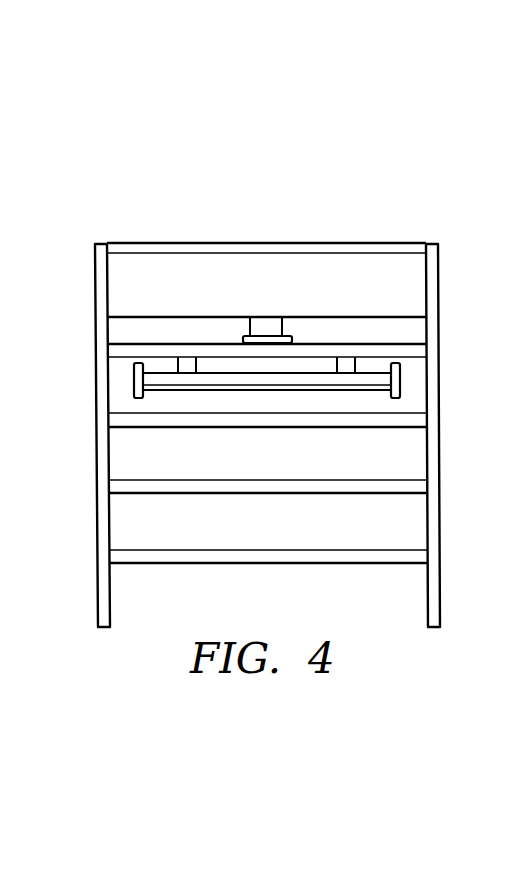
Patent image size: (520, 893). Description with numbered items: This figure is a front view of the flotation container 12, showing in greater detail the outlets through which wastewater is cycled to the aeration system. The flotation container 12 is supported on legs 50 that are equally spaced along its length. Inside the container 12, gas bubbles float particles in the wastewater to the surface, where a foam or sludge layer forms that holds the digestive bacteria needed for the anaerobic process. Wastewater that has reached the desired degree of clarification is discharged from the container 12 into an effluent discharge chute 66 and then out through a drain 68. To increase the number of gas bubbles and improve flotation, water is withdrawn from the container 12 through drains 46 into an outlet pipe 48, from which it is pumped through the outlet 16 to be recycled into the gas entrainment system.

The flotation container 12 is at (267, 388).
The outlet 16 is at (312, 415).
The drains 46 is at (182, 373).
The outlet pipe 48 is at (258, 386).
The legs 50 is at (108, 590).
The effluent discharge chute 66 is at (318, 258).
The drain 68 is at (245, 335).